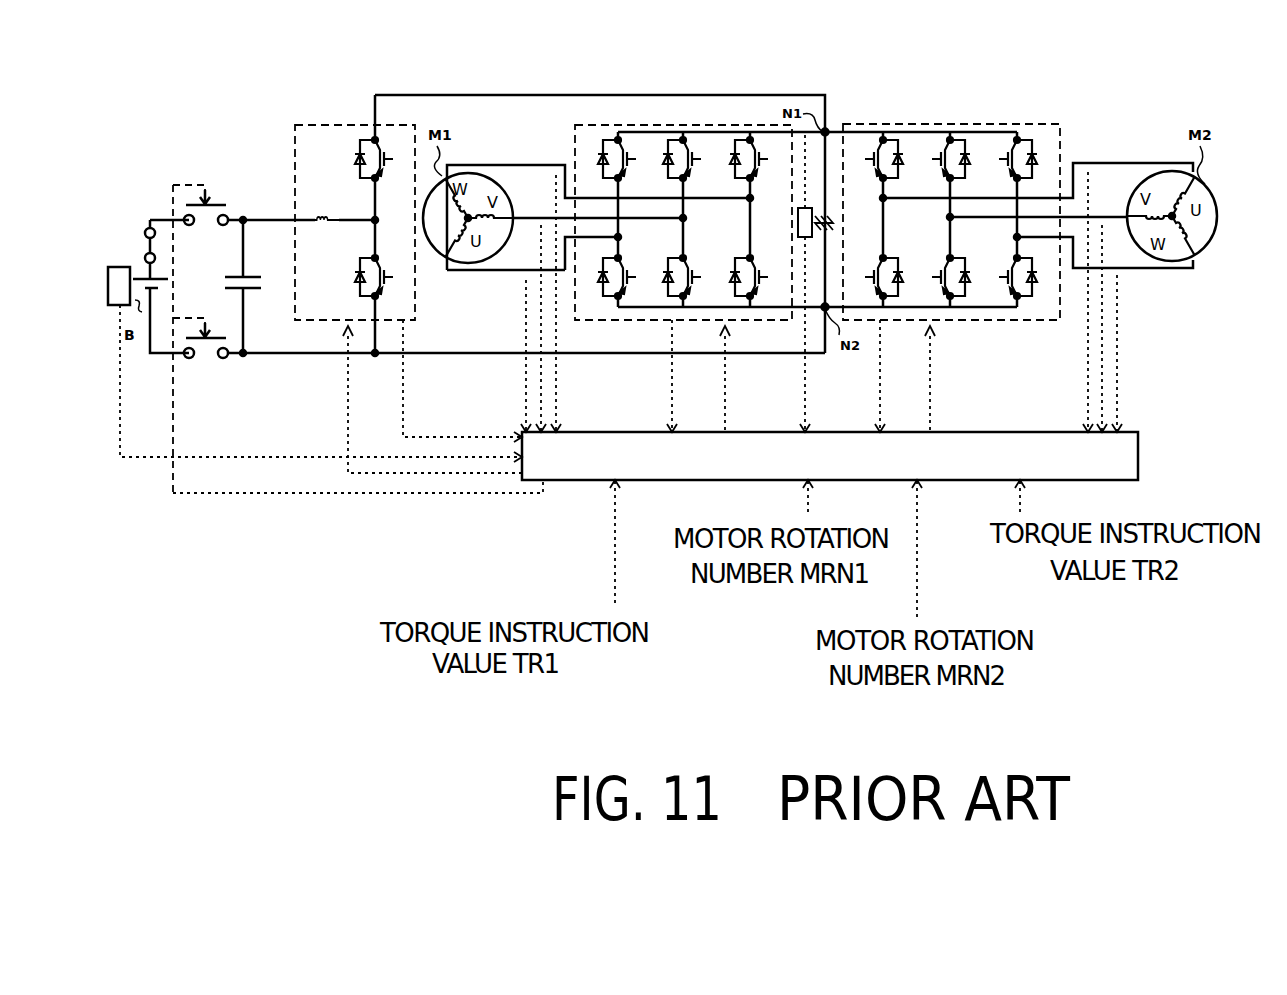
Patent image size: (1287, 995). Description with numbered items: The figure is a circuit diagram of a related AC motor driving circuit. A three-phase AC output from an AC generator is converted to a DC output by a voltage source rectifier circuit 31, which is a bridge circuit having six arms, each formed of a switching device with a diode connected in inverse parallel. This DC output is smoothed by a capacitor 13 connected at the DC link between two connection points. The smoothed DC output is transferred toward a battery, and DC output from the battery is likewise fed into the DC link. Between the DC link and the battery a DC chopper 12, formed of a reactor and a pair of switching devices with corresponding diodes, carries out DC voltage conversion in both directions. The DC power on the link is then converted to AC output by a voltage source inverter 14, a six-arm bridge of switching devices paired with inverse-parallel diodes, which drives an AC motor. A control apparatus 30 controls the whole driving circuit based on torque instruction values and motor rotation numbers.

The DC chopper 12 is at (328, 125).
The capacitor 13 is at (829, 210).
The voltage source inverter 14 is at (648, 124).
The control apparatus 30 is at (1140, 452).
The voltage source rectifier circuit 31 is at (964, 124).